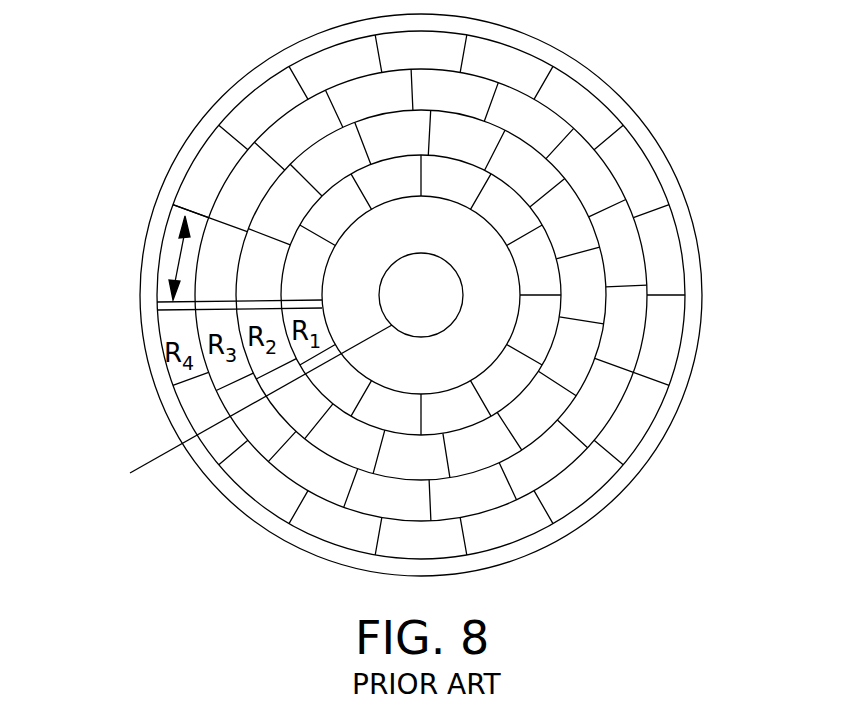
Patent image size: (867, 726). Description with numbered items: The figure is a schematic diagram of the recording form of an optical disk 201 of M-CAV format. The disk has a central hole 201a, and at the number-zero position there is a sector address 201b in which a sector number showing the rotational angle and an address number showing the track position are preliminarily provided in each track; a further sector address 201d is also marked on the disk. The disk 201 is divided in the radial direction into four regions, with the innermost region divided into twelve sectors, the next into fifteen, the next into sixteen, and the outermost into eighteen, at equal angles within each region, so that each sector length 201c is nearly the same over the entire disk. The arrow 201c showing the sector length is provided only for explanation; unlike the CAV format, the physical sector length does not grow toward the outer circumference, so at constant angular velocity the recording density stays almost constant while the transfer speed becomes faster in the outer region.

The optical disk 201 is at (545, 45).
The central hole 201a is at (261, 380).
The sector address at number 0 201b is at (158, 306).
The sector length 201c is at (174, 256).
The sector address 201d is at (231, 124).